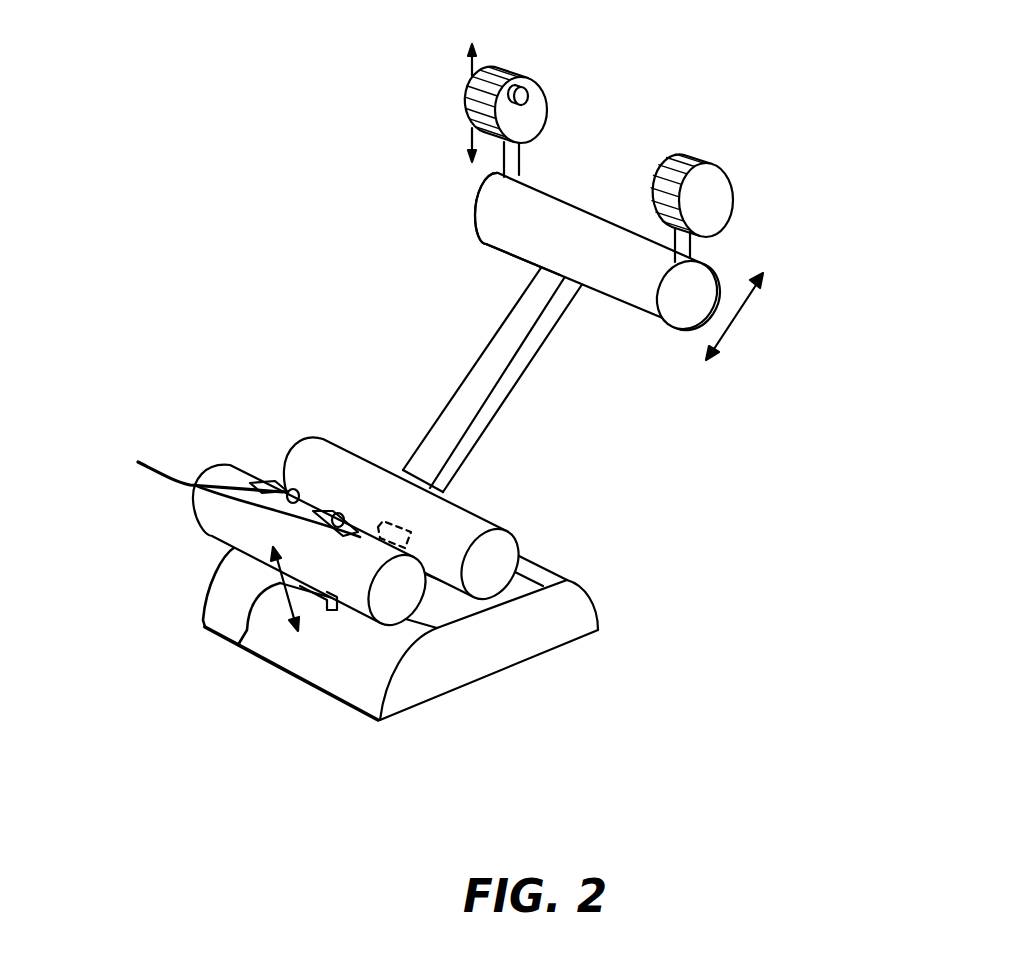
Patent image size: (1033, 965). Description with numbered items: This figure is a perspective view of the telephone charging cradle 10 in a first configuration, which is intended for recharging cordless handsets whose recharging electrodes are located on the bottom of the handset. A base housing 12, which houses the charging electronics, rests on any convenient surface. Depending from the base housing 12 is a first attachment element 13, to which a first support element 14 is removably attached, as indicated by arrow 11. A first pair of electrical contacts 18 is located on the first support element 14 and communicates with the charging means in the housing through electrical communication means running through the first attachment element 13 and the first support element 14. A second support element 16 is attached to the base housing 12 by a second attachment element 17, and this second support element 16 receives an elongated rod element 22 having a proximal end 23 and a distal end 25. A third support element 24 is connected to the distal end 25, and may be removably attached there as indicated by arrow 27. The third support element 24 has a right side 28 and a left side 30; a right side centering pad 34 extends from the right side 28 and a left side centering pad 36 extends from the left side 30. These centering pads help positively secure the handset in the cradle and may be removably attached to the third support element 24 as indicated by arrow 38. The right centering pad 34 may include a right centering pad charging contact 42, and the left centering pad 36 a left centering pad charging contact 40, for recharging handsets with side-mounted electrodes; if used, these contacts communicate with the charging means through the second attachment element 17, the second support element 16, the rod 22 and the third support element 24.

The charging cradle 10 is at (378, 299).
The arrow 11 is at (238, 645).
The base housing 12 is at (570, 610).
The first attachment element 13 is at (327, 605).
The first support element 14 is at (223, 527).
The second support element 16 is at (497, 547).
The second attachment element 17 is at (378, 527).
The first pair of electrical contacts 18 is at (226, 486).
The elongated rod element 22 is at (505, 400).
The proximal end 23 is at (403, 470).
The third support element 24 is at (573, 200).
The distal end 25 is at (545, 269).
The arrow 27 is at (740, 312).
The right side 28 is at (703, 273).
The left side 30 is at (480, 195).
The right side centering pad 34 is at (720, 192).
The left side centering pad 36 is at (482, 80).
The arrow 38 is at (472, 128).
The left centering pad charging contact 40 is at (532, 93).
The right centering pad charging contact 42 is at (678, 158).